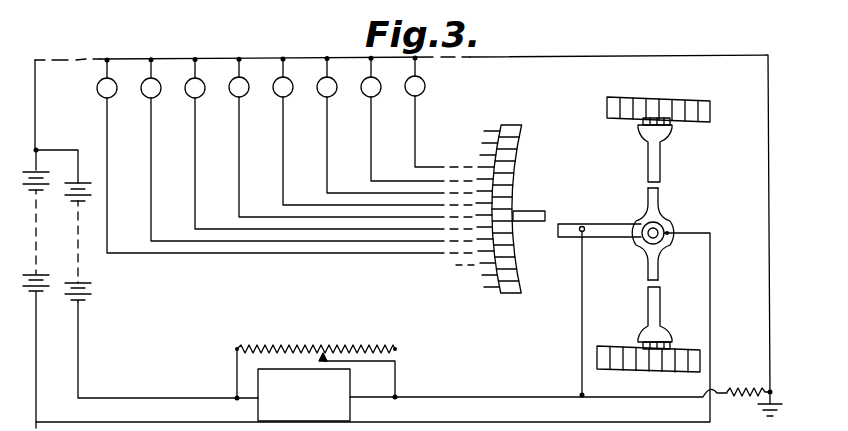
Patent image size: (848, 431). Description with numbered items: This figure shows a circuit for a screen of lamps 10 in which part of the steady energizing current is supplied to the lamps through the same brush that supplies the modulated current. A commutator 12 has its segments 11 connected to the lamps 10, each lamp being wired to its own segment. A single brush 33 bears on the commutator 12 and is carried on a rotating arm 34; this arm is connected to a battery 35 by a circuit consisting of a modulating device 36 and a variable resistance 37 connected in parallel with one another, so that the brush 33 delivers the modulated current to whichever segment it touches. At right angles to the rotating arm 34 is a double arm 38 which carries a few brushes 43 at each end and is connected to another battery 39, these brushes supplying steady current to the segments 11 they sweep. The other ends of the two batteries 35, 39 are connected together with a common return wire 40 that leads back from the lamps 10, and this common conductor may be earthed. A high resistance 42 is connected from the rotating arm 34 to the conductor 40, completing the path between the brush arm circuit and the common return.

The lamps 10 is at (114, 94).
The segments 11 is at (503, 248).
The commutator 12 is at (513, 123).
The single brush 33 is at (520, 211).
The rotating arm 34 is at (602, 226).
The battery 35 is at (88, 284).
The modulating device 36 is at (330, 413).
The variable resistance 37 is at (296, 350).
The double arm 38 is at (656, 194).
The battery 39 is at (45, 291).
The common return wire 40 is at (213, 58).
The high resistance 42 is at (733, 391).
The brushes 43 is at (672, 121).